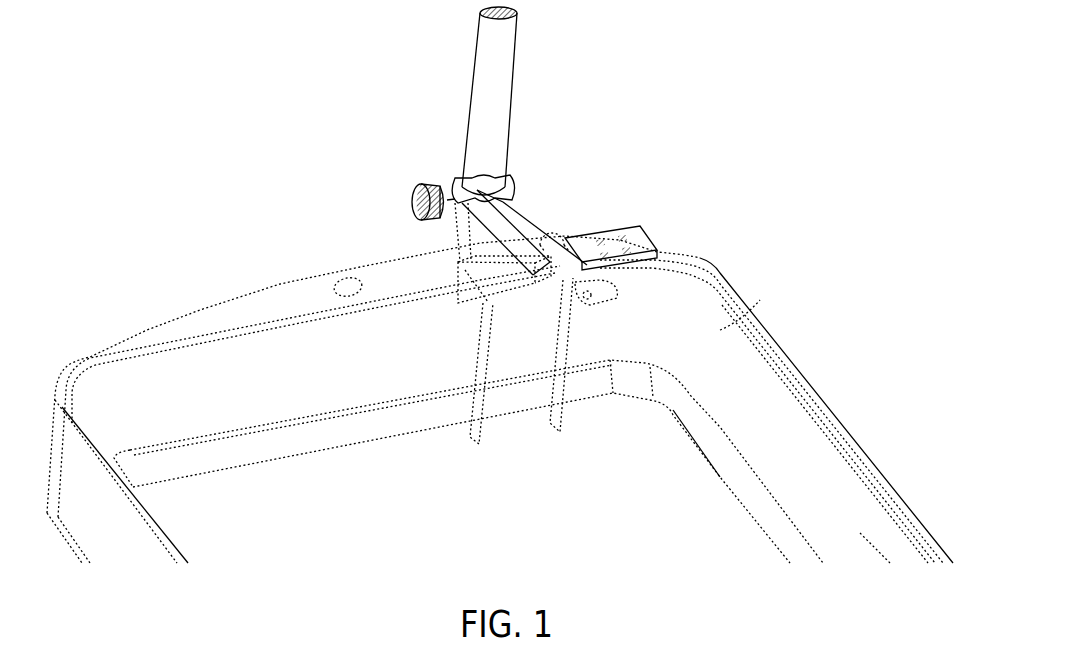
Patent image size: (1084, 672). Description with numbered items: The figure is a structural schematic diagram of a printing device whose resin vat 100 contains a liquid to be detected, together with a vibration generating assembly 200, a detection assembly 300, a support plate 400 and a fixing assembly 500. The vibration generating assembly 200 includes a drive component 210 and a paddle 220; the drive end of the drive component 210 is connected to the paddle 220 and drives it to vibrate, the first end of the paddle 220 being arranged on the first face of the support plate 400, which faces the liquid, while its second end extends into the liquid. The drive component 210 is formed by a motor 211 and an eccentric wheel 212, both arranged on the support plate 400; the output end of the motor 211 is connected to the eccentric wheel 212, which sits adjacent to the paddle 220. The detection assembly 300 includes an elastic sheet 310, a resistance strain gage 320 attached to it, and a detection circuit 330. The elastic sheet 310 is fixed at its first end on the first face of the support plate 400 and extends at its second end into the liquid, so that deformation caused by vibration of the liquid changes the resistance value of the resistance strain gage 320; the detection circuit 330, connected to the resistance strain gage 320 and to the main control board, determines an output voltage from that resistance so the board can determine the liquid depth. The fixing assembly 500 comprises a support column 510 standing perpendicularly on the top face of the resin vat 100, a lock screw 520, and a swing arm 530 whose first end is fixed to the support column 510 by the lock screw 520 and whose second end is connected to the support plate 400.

The resin vat 100 is at (800, 440).
The vibration generating assembly 200 is at (813, 155).
The drive component 210 is at (726, 190).
The motor 211 is at (572, 226).
The eccentric wheel 212 is at (600, 305).
The paddle 220 is at (720, 330).
The detection assembly 300 is at (400, 186).
The elastic sheet 310 is at (477, 373).
The resistance strain gage 320 is at (455, 312).
The detection circuit 330 is at (497, 250).
The support plate 400 is at (550, 230).
The fixing assembly 500 is at (590, 42).
The support column 510 is at (503, 82).
The lock screw 520 is at (427, 188).
The swing arm 530 is at (510, 178).